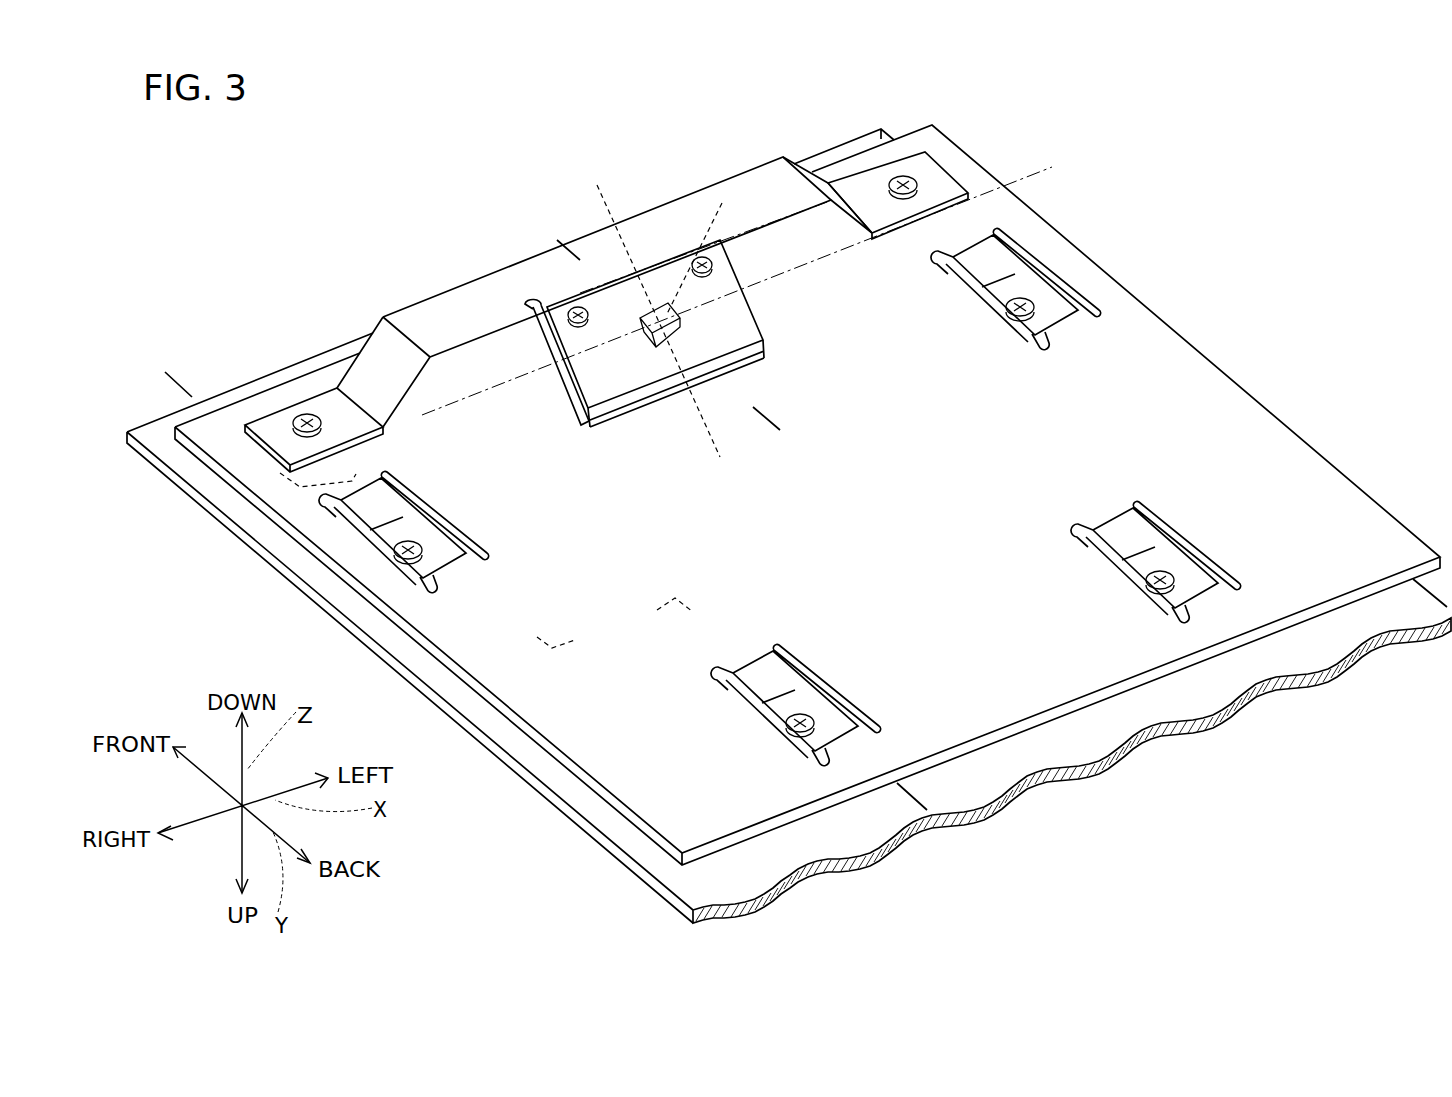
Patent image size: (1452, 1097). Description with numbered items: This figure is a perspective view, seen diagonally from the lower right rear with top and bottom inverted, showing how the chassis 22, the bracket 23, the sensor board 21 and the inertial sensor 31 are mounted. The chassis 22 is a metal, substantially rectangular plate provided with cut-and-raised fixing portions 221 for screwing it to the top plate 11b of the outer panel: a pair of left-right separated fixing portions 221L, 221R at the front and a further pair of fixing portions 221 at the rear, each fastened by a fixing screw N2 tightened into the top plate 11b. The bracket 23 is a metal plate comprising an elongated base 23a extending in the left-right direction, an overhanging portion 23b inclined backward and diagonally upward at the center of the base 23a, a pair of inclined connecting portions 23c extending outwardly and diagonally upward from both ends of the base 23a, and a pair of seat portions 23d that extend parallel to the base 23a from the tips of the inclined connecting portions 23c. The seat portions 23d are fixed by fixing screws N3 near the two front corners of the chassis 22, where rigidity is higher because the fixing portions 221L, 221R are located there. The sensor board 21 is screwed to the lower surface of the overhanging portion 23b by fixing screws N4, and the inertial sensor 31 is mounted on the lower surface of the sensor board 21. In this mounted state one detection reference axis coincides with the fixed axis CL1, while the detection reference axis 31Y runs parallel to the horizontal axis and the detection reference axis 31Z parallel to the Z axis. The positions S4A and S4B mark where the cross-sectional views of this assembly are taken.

The top plate 11b is at (272, 572).
The sensor board 21 is at (760, 318).
The chassis 22 is at (1197, 357).
The bracket 23 is at (645, 286).
The base 23a is at (442, 318).
The overhanging portion 23b is at (567, 378).
The inclined connecting portions 23c is at (375, 355).
The seat portions 23d is at (272, 425).
The inertial sensor 31 is at (650, 345).
The detection reference axis 31Y is at (597, 185).
The detection reference axis 31Z is at (680, 290).
The fixed axis CL1 is at (830, 255).
The fixing portions 221 is at (807, 490).
The fixing portion 221L is at (1060, 292).
The fixing portion 221R is at (462, 523).
The fixing screws N2 is at (405, 527).
The fixing screws N3 is at (910, 176).
The fixing screws N4 is at (718, 262).
The section position S4A is at (168, 385).
The section position S4B is at (562, 254).